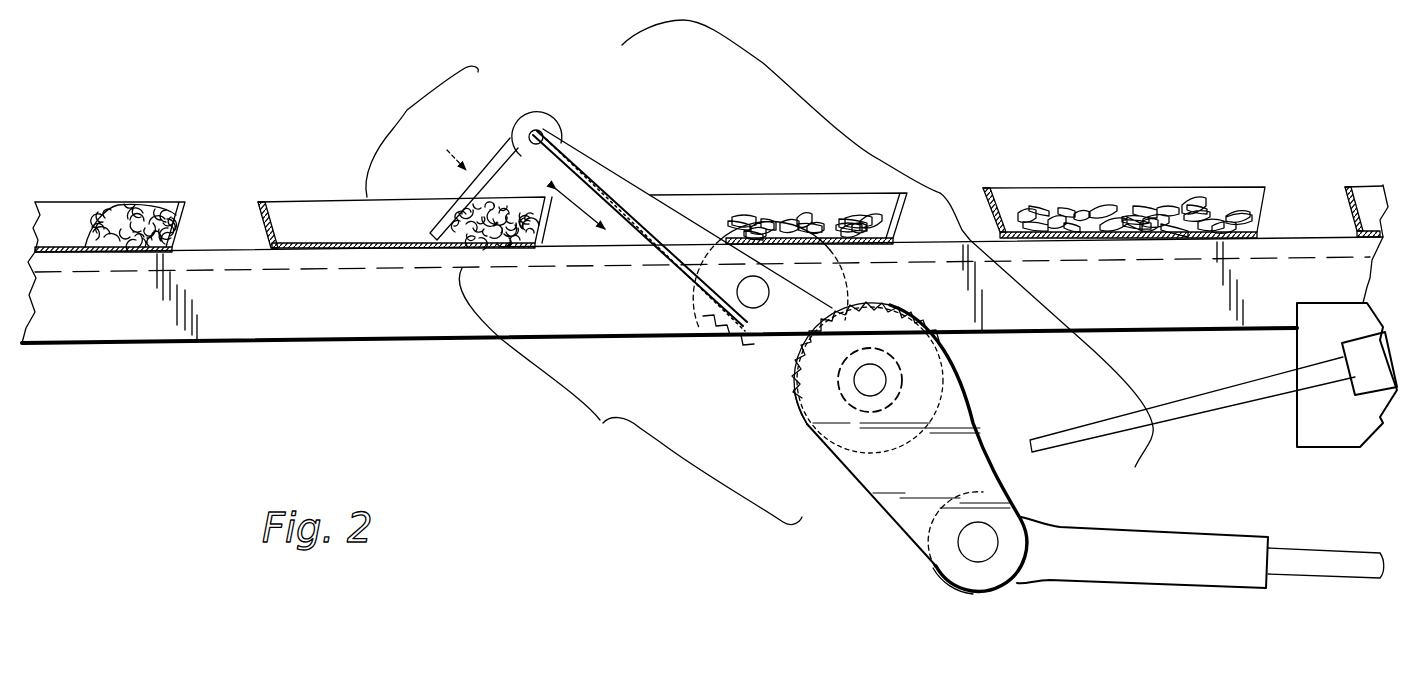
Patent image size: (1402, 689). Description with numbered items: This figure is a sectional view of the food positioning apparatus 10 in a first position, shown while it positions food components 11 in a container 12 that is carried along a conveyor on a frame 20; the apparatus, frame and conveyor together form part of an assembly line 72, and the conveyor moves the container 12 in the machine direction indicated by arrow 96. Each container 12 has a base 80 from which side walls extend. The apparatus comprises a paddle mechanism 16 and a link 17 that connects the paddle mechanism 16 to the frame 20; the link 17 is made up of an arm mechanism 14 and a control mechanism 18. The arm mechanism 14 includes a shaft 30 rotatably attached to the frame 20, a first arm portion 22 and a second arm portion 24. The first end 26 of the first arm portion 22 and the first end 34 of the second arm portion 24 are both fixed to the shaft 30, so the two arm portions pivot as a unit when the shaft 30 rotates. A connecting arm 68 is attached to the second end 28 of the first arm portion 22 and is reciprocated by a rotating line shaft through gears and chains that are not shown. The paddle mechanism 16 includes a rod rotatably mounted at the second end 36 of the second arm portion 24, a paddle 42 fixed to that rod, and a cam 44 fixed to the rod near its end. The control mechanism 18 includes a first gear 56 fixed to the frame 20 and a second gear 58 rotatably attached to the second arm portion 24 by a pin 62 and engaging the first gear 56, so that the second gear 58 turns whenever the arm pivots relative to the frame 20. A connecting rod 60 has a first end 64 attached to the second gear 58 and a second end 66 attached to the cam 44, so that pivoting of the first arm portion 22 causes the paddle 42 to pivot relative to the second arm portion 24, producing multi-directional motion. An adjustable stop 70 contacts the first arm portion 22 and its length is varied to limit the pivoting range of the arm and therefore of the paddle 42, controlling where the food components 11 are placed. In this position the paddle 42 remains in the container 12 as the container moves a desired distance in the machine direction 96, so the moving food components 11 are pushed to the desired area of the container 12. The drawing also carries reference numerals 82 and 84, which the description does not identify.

The food positioning apparatus 10 is at (516, 496).
The food components 11 is at (455, 255).
The container 12 is at (291, 196).
The arm mechanism 14 is at (947, 193).
The paddle mechanism 16 is at (407, 110).
The link 17 is at (791, 547).
The control mechanism 18 is at (603, 423).
The frame 20 is at (155, 345).
The first arm portion 22 is at (887, 517).
The second arm portion 24 is at (618, 175).
The first end 26 is at (794, 400).
The second end 28 is at (983, 589).
The shaft 30 is at (897, 378).
The first end 34 is at (873, 335).
The second end 36 is at (547, 126).
The paddle 42 is at (440, 235).
The cam 44 is at (522, 118).
The first gear 56 is at (853, 453).
The second gear 58 is at (701, 312).
The connecting rod 60 is at (642, 250).
The pin 62 is at (757, 277).
The first end 64 is at (712, 347).
The second end 66 is at (500, 156).
The connecting arm 68 is at (1247, 577).
The adjustable stop 70 is at (1234, 406).
The assembly line 72 is at (362, 343).
The base 80 is at (297, 253).
The tray wall 82 is at (262, 218).
The tray liner 84 is at (552, 250).
The machine direction arrow 96 is at (937, 147).